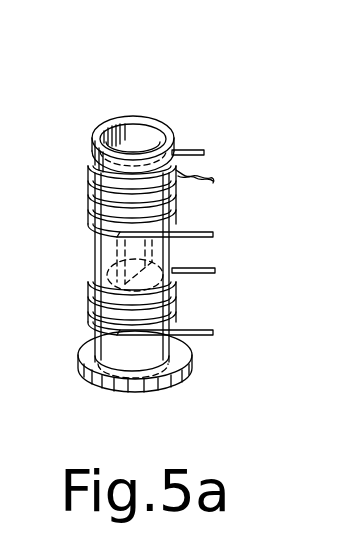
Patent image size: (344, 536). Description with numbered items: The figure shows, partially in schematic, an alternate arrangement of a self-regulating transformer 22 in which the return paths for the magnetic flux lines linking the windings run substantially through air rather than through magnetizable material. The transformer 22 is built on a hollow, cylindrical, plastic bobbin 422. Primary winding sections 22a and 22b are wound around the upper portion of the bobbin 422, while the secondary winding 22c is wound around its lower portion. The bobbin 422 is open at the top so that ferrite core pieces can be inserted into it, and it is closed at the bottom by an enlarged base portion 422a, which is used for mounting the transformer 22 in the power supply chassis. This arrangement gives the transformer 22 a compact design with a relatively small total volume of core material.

The self-regulating transformer 22 is at (144, 90).
The bobbin 422 is at (93, 136).
The primary winding section 22a is at (205, 152).
The primary winding section 22b is at (213, 235).
The secondary winding 22c is at (184, 297).
The enlarged base portion 422a is at (188, 360).